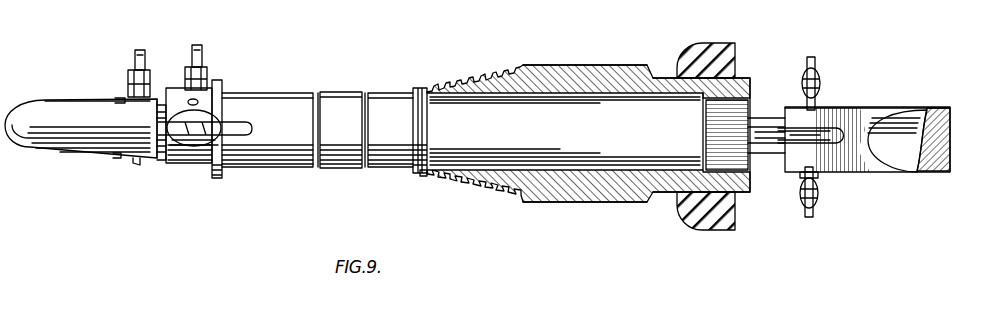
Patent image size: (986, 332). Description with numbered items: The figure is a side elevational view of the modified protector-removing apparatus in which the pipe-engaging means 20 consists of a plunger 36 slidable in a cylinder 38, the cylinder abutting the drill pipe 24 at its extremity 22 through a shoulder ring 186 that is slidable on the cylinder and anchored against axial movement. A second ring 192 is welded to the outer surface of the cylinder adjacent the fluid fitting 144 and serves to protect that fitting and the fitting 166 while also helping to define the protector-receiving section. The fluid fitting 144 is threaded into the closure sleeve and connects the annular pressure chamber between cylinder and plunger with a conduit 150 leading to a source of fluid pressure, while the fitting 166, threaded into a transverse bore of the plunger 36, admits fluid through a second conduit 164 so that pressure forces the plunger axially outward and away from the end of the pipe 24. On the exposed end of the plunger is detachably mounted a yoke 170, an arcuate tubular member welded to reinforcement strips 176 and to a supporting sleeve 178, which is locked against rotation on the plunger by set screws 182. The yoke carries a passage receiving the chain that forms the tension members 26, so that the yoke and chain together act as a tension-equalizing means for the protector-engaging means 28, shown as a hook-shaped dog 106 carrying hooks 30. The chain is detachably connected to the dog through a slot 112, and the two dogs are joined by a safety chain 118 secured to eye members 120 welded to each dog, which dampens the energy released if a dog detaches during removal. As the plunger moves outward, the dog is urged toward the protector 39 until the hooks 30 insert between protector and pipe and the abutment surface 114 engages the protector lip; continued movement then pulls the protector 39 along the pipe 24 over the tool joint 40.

The pipe-engaging means 20 is at (296, 88).
The extremity of the drill pipe 22 is at (434, 88).
The drill pipe 24 is at (668, 78).
The tension members 26 is at (189, 140).
The protector-engaging means 28 is at (886, 102).
The hooks 30 is at (897, 150).
The plunger 36 is at (167, 90).
The cylinder 38 is at (337, 92).
The protector 39 is at (706, 43).
The tool joint 40 is at (579, 65).
The hook-shaped dog 106 is at (869, 170).
The slot 112 is at (828, 131).
The abutment surface 114 is at (905, 108).
The safety chain 118 is at (815, 62).
The eye members 120 is at (805, 180).
The fluid fitting 144 is at (205, 74).
The conduit 150 is at (202, 54).
The second conduit 164 is at (144, 56).
The fitting 166 is at (130, 80).
The yoke 170 is at (50, 100).
The reinforcement strips 176 is at (83, 100).
The supporting sleeve 178 is at (127, 160).
The set screws 182 is at (138, 166).
The ring 186 is at (424, 175).
The second ring 192 is at (223, 85).